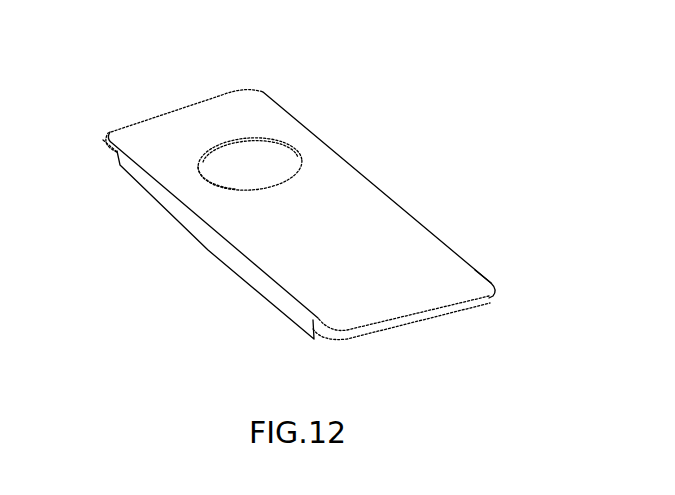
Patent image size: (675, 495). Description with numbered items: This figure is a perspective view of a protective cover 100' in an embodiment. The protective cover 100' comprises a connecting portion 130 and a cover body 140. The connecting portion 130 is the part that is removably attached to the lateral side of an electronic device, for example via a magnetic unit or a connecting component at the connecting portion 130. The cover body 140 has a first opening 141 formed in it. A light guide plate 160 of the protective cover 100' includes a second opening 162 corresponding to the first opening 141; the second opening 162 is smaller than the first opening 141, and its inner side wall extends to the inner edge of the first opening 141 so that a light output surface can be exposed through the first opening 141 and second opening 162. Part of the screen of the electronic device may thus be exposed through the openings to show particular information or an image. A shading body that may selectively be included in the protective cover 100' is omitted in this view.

The protective cover 100' is at (451, 135).
The connecting portion 130 is at (187, 215).
The cover body 140 is at (273, 113).
The first opening 141 is at (242, 135).
The light guide plate 160 is at (491, 299).
The second opening 162 is at (198, 167).